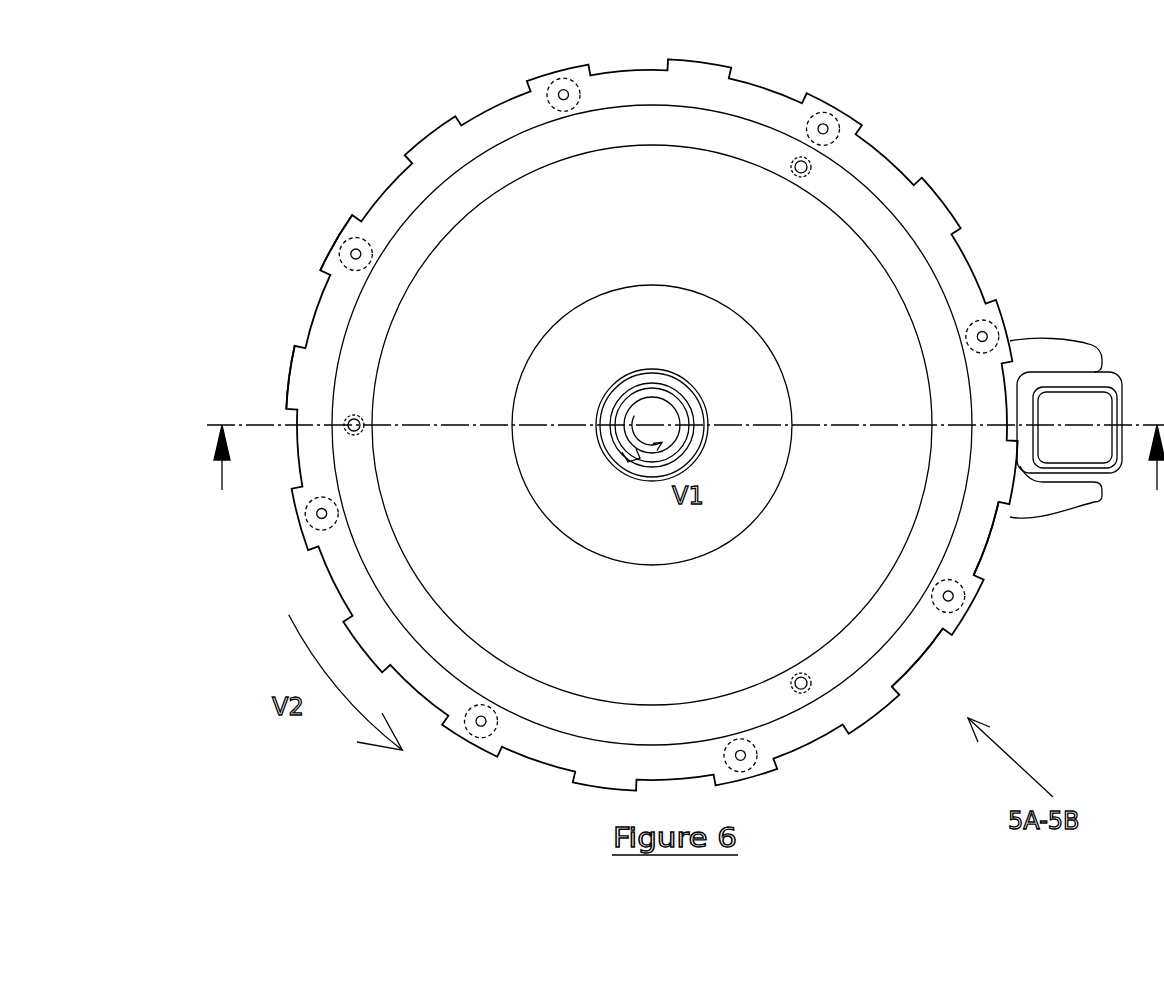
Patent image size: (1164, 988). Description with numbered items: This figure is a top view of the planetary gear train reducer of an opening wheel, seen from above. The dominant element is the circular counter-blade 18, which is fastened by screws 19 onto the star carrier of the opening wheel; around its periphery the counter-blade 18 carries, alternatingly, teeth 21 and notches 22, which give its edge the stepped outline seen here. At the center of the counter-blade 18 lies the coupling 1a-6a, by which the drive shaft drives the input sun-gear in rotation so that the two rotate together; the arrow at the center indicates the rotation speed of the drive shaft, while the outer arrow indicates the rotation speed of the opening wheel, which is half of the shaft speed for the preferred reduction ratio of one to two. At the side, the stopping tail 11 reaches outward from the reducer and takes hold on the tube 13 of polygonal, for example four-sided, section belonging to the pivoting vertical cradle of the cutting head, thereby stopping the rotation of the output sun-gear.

The counter-blade 18 is at (405, 192).
The screws 19 is at (348, 240).
The teeth 21 is at (322, 262).
The notches 22 is at (917, 665).
The stopping tail 11 is at (1048, 353).
The tube 13 is at (1087, 385).
The coupling 6a is at (624, 464).
The coupling 1a is at (626, 462).